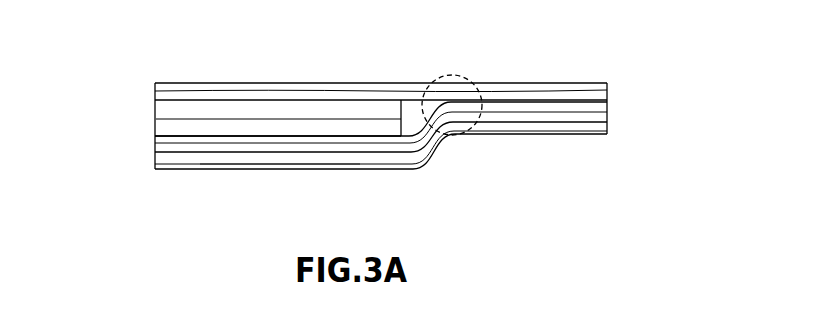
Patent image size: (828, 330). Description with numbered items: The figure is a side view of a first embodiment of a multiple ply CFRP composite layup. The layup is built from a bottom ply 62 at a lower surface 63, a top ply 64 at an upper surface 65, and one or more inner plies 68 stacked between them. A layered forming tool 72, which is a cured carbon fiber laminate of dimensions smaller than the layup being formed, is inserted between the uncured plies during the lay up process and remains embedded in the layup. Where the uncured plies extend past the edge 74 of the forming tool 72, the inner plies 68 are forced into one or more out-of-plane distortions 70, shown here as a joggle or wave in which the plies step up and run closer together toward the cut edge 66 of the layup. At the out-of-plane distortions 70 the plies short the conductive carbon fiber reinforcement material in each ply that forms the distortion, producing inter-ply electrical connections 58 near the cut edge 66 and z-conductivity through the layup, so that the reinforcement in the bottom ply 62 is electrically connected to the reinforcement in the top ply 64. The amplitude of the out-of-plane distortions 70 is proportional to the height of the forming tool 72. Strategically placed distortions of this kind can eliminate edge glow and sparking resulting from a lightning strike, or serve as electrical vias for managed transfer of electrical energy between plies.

The inter-ply electrical connections 58 is at (452, 76).
The bottom ply 62 is at (173, 167).
The lower surface 63 is at (282, 170).
The top ply 64 is at (365, 90).
The upper surface 65 is at (212, 83).
The cut edge 66 is at (608, 93).
The inner plies 68 is at (158, 147).
The out-of-plane distortions 70 is at (457, 145).
The layered forming tools 72 is at (158, 128).
The edge of the layered forming tool 74 is at (402, 127).